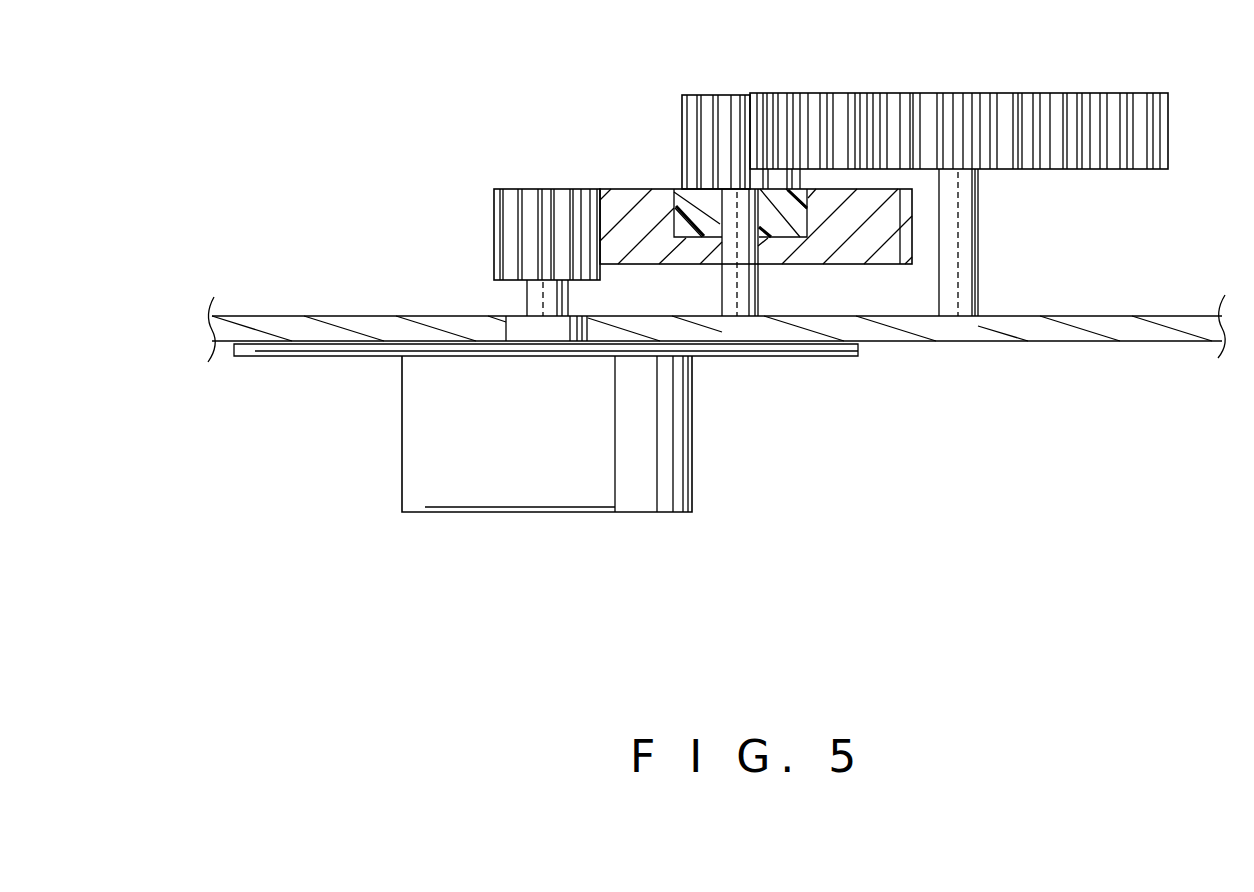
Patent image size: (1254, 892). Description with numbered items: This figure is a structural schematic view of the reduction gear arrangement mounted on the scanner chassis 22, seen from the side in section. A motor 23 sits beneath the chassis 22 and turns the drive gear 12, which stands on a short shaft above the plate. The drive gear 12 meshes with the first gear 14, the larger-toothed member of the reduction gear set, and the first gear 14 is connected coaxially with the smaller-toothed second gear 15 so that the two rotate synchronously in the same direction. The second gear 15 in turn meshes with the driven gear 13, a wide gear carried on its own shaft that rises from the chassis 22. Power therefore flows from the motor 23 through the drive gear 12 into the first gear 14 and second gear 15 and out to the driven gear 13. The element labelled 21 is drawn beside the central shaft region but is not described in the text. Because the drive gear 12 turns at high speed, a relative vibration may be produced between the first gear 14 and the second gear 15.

The drive gear 12 is at (497, 222).
The driven gear 13 is at (1168, 118).
The first gear 14 is at (906, 232).
The second gear 15 is at (687, 128).
The shaft 21 is at (780, 225).
The scanner chassis 22 is at (1083, 332).
The motor 23 is at (415, 438).